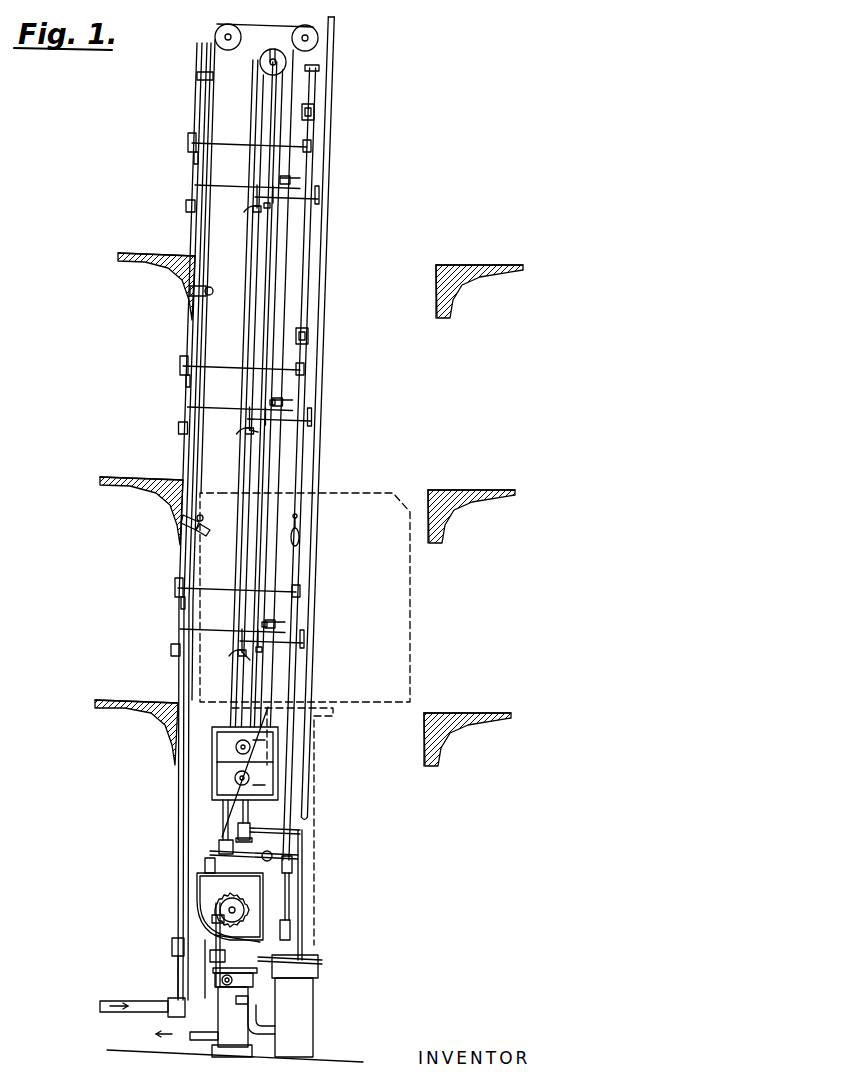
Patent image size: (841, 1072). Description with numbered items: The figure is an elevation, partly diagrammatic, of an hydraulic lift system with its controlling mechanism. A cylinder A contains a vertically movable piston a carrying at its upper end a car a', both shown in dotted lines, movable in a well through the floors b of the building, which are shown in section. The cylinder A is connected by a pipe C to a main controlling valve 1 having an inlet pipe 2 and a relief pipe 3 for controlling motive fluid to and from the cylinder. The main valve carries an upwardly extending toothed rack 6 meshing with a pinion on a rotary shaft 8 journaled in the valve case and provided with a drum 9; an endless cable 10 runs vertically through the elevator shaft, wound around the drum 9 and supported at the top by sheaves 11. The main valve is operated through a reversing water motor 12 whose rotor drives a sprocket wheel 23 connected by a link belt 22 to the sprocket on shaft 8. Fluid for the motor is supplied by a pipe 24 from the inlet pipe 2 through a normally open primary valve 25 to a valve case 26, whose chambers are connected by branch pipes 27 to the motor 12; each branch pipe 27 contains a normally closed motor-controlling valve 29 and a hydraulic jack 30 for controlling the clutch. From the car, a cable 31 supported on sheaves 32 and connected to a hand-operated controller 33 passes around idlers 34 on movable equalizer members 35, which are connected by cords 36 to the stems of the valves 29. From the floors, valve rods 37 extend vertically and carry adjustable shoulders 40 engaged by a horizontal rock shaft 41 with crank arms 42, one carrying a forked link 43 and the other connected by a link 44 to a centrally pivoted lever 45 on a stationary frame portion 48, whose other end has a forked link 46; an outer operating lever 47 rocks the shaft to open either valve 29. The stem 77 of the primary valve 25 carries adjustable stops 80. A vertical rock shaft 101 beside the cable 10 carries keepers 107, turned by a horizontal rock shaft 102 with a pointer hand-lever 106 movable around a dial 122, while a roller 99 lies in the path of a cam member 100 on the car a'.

The main controlling valve 1 is at (236, 1035).
The inlet pipe 2 is at (148, 1001).
The relief pipe 3 is at (200, 1038).
The toothed rack 6 is at (235, 990).
The rotary shaft 8 is at (205, 990).
The drum 9 is at (204, 985).
The endless cable 10 is at (313, 251).
The sheaves 11 is at (222, 34).
The reversing water motor 12 is at (200, 890).
The link belt 22 is at (212, 924).
The sprocket wheel 23 is at (219, 908).
The pipe 24 is at (178, 967).
The primary valve 25 is at (184, 950).
The valve case 26 is at (212, 935).
The branch pipes 27 is at (205, 863).
The motor-controlling valve 29 is at (237, 838).
The hydraulic jack 30 is at (293, 880).
The cable 31 is at (284, 285).
The sheaves 32 is at (271, 56).
The hand-operated controller 33 is at (291, 581).
The idlers 34 is at (236, 747).
The movable members of equalizer 35 is at (262, 781).
The cords 36 is at (242, 812).
The valve rods 37 is at (252, 237).
The adjustable shoulders 40 is at (248, 210).
The horizontal rock shaft 41 is at (215, 190).
The crank arms 42 is at (256, 185).
The forked link 43 is at (256, 428).
The link 44 is at (283, 186).
The centrally pivoted lever 45 is at (274, 404).
The forked link 46 is at (266, 209).
The operating lever 47 is at (189, 205).
The stationary portion of frame 48 is at (320, 188).
The valve stem 77 is at (191, 460).
The adjustable stops 80 is at (199, 76).
The roller 99 is at (212, 291).
The cam member 100 is at (212, 525).
The vertical rock shaft 101 is at (313, 96).
The horizontal rock shaft 102 is at (236, 143).
The hand-lever 106 is at (188, 144).
The keepers 107 is at (315, 114).
The dial 122 is at (193, 160).
The cylinder A is at (306, 1004).
The pipe C is at (268, 1012).
The piston a is at (284, 831).
The car a' is at (317, 597).
The floors b is at (447, 268).